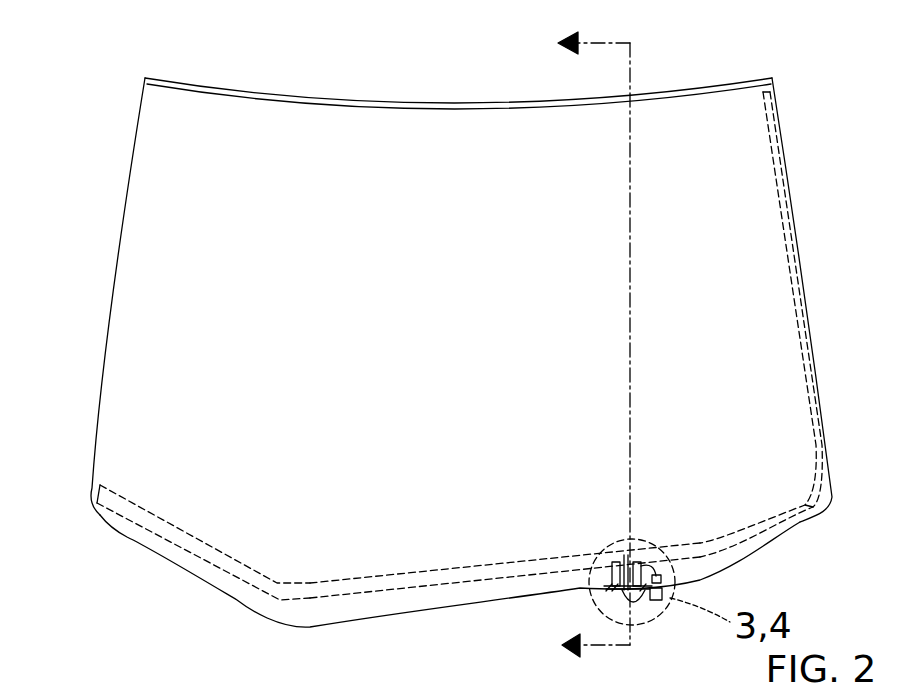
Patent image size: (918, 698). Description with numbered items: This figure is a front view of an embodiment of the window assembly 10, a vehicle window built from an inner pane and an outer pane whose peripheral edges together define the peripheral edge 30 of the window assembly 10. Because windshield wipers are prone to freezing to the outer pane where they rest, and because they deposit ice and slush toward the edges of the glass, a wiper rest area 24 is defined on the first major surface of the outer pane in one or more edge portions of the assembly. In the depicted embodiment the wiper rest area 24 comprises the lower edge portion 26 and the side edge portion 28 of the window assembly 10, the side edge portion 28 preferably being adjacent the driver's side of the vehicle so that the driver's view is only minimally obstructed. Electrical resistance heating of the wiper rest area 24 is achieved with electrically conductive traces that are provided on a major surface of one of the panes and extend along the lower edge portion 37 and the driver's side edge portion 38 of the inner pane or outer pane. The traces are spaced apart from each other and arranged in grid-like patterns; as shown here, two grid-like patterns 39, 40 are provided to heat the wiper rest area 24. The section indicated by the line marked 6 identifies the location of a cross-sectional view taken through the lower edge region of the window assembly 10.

The window assembly 10 is at (87, 156).
The wiper rest area 24 is at (467, 552).
The lower edge portion 26 is at (385, 588).
The side edge portion 28 is at (790, 173).
The peripheral edge 30 is at (97, 413).
The lower edge portion 37 is at (137, 522).
The driver's side edge portion 38 is at (815, 355).
The grid-like pattern 39 is at (208, 550).
The grid-like pattern 40 is at (793, 218).
The section line 6- 6 is at (585, 349).